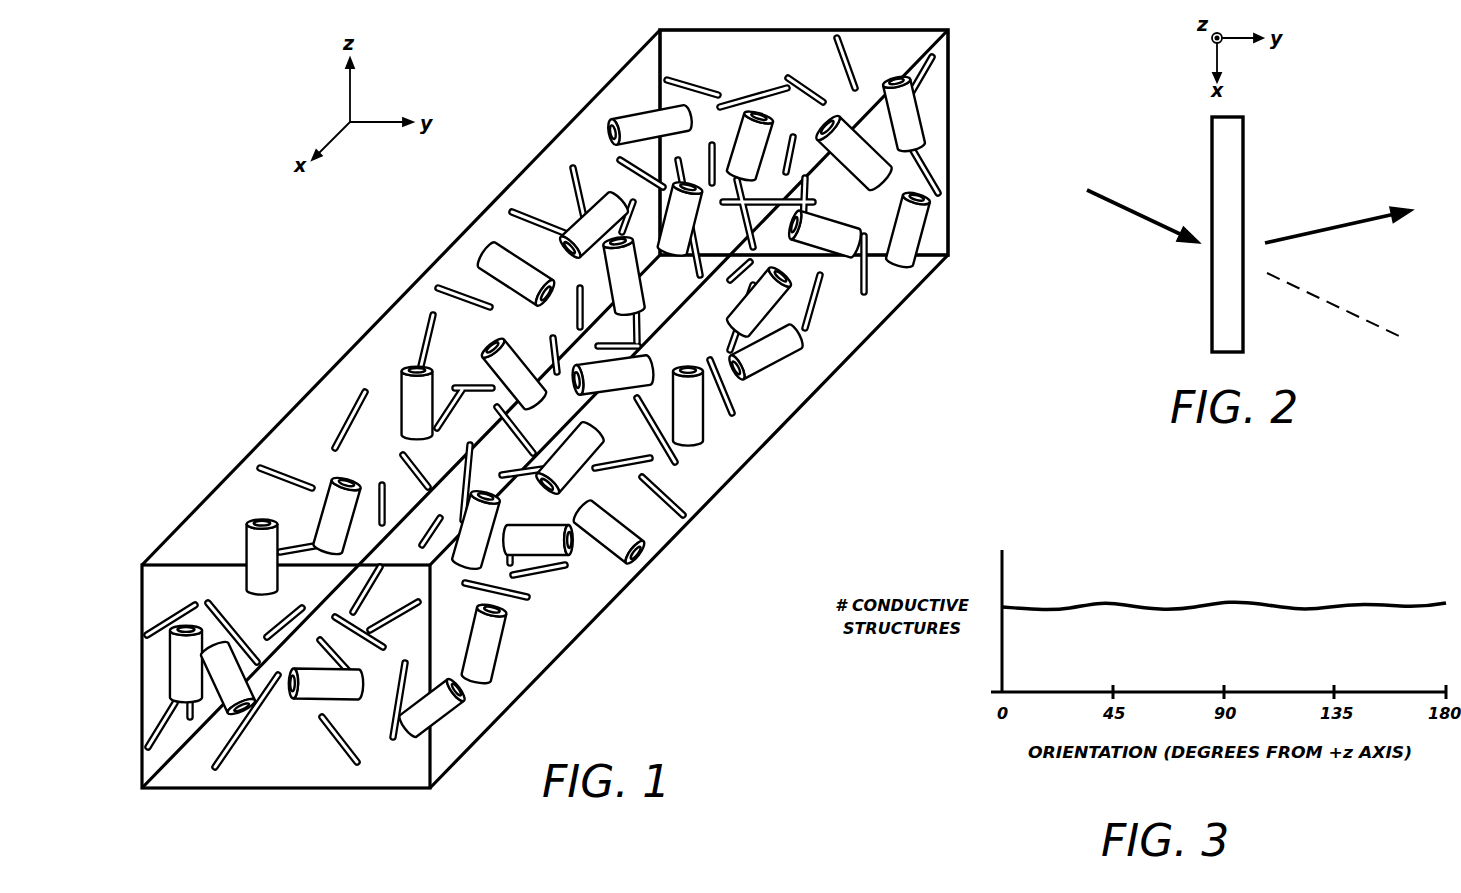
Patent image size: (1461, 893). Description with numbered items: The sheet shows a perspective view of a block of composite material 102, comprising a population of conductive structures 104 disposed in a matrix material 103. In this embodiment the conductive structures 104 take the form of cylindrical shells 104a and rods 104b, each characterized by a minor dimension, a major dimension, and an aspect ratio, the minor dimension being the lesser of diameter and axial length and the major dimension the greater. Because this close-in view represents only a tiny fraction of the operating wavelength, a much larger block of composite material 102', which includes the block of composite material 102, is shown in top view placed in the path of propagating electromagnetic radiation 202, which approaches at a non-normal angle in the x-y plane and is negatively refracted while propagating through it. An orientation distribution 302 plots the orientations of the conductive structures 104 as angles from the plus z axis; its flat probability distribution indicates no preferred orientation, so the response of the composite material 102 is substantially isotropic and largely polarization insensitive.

In FIG. 1, the composite material 102 is at (545, 409).
In FIG. 1, the matrix material 103 is at (627, 77).
In FIG. 1, the conductive structures 104 is at (405, 363).
In FIG. 1, the cylindrical shells 104a is at (772, 350).
In FIG. 1, the rods 104b is at (820, 307).
In FIG. 2, the composite material 102' is at (1280, 234).
In FIG. 2, the electromagnetic radiation 202 is at (1120, 207).
In FIG. 3, the orientation distribution 302 is at (1179, 604).